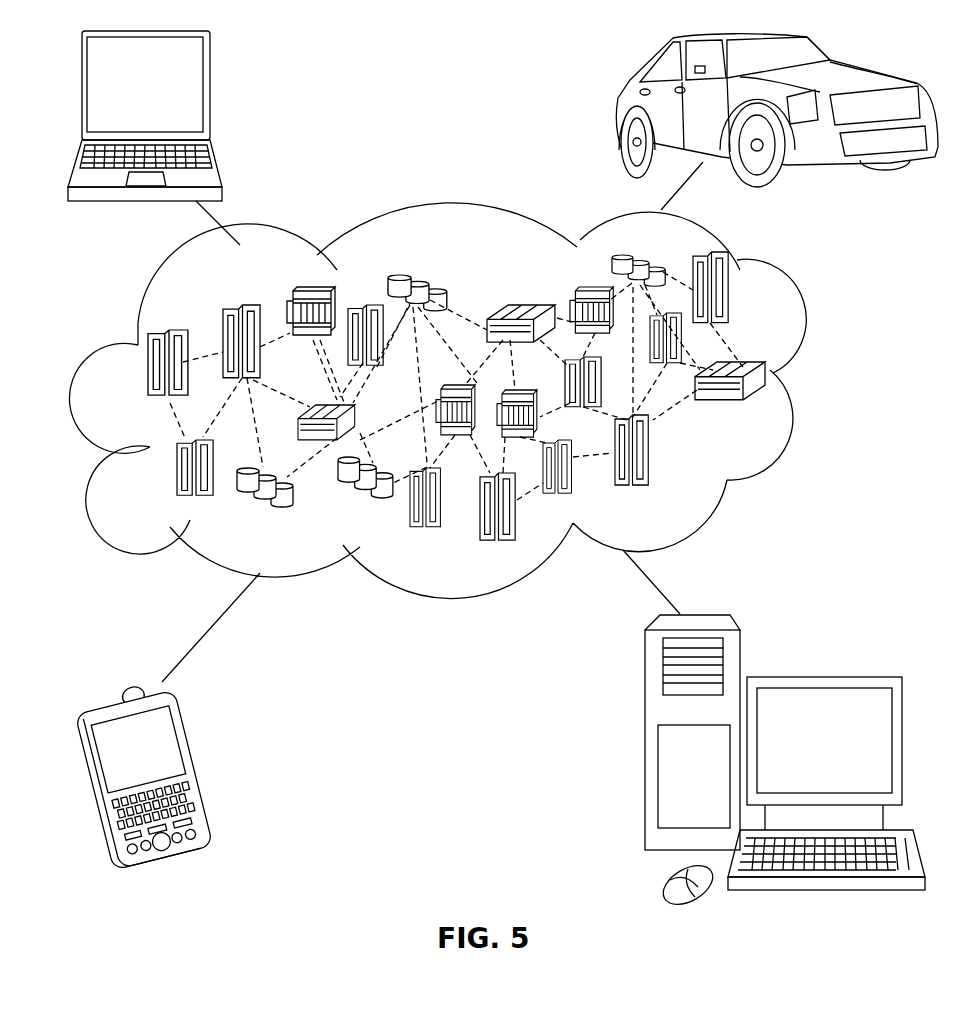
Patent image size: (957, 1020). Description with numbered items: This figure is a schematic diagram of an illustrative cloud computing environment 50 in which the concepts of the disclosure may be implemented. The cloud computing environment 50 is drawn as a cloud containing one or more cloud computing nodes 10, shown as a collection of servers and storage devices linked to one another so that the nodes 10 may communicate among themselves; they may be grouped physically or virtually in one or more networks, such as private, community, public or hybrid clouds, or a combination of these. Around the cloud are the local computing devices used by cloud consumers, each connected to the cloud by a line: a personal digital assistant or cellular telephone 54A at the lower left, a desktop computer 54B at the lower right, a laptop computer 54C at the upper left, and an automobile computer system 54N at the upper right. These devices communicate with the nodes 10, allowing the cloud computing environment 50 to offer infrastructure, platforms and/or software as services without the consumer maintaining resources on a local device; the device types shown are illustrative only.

The cloud computing node 10 is at (778, 416).
The cloud computing environment 50 is at (474, 401).
The personal digital assistant (PDA) or cellular telephone 54A is at (203, 770).
The desktop computer 54B is at (823, 676).
The laptop computer 54C is at (210, 93).
The automobile computer system 54N is at (618, 110).